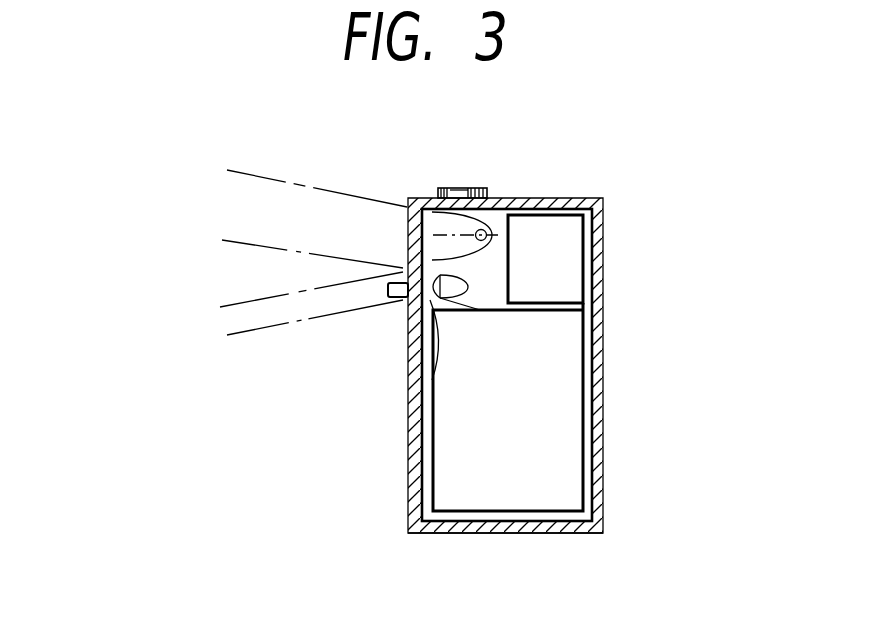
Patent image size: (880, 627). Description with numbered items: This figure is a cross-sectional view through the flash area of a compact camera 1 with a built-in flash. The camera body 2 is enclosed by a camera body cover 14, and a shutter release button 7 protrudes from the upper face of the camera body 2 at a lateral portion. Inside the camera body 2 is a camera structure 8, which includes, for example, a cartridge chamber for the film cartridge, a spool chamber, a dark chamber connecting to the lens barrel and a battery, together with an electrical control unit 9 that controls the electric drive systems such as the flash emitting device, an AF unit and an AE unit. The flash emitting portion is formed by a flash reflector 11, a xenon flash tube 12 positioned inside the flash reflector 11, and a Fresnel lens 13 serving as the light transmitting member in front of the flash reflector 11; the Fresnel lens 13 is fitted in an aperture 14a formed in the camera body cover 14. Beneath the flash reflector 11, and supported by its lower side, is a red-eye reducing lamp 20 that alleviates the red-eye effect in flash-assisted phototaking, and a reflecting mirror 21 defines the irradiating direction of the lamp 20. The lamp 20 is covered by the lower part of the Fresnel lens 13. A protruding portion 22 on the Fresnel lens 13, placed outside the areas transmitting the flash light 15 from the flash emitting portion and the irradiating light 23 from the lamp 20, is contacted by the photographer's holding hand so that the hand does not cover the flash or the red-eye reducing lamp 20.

The camera 1 is at (660, 257).
The camera body 2 is at (398, 495).
The shutter release button 7 is at (450, 188).
The camera structure 8 is at (570, 378).
The electrical control unit 9 is at (563, 238).
The flash reflector 11 is at (473, 190).
The xenon flash tube 12 is at (484, 229).
The Fresnel lens 13 is at (406, 205).
The camera body cover 14 is at (473, 534).
The aperture 14a is at (410, 390).
The flash light 15 is at (255, 172).
The red-eye reducing lamp 20 is at (403, 300).
The reflecting mirror 21 is at (452, 297).
The protruding portion 22 is at (387, 288).
The irradiating light 23 is at (260, 328).